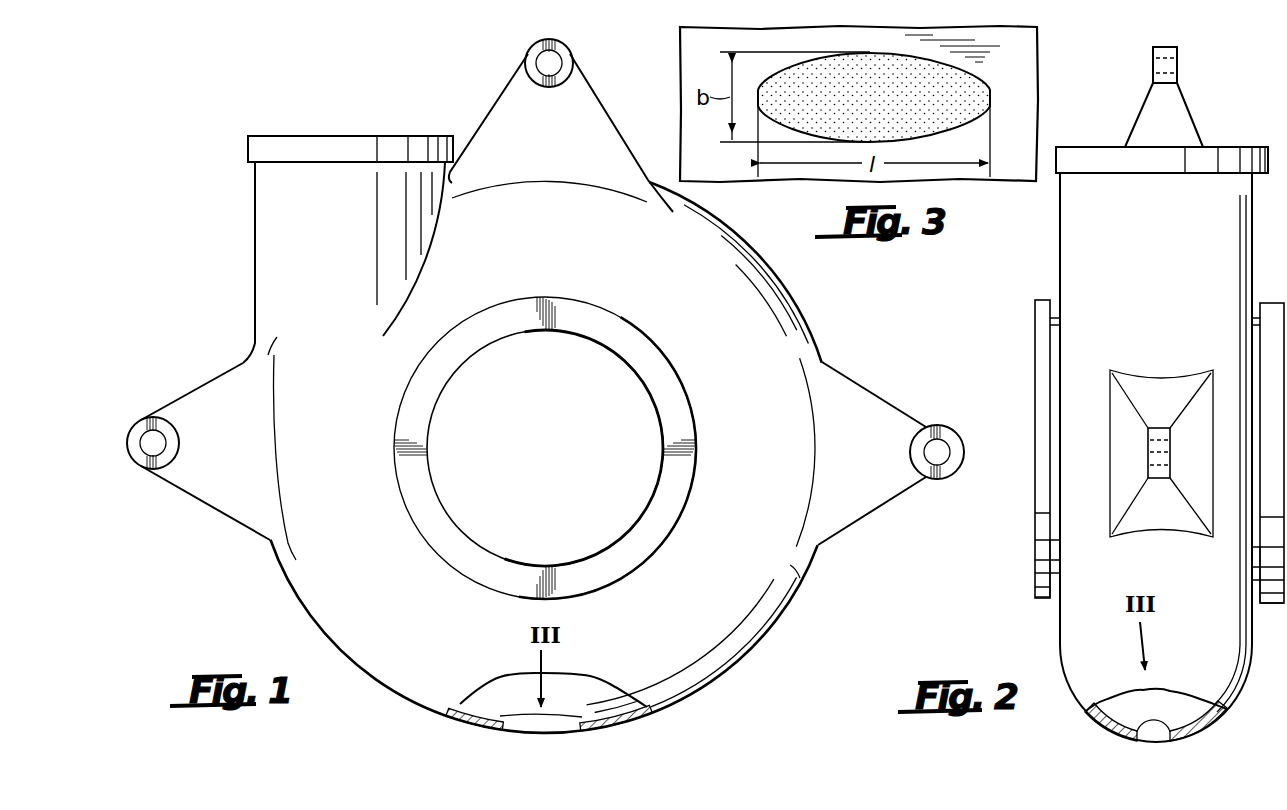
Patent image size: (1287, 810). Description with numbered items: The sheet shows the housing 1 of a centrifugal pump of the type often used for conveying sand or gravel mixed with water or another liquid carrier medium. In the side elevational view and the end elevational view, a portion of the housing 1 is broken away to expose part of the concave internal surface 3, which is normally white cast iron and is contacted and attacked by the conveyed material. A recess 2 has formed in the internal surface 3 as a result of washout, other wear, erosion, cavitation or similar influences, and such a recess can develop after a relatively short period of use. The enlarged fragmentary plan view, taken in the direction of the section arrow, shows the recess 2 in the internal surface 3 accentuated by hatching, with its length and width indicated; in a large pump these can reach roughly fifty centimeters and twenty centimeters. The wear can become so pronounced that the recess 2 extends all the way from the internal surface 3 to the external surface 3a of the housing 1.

In FIG. 1, the housing 1 is at (226, 240).
In FIG. 2, the housing 1 is at (1045, 618).
In FIG. 1, the recess 2 is at (560, 725).
In FIG. 3, the recess 2 is at (982, 99).
In FIG. 2, the recess 2 is at (1163, 728).
In FIG. 1, the internal surface 3 is at (487, 712).
In FIG. 3, the internal surface 3 is at (1016, 56).
In FIG. 2, the internal surface 3 is at (1114, 712).
In FIG. 1, the external surface 3a is at (662, 713).
In FIG. 2, the external surface 3a is at (1238, 703).